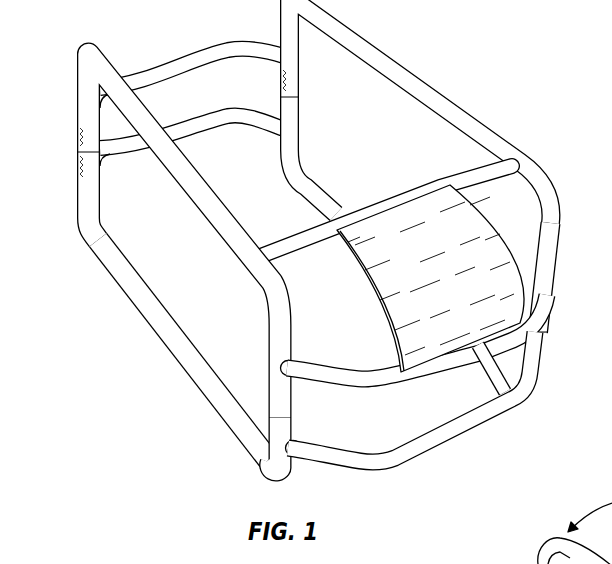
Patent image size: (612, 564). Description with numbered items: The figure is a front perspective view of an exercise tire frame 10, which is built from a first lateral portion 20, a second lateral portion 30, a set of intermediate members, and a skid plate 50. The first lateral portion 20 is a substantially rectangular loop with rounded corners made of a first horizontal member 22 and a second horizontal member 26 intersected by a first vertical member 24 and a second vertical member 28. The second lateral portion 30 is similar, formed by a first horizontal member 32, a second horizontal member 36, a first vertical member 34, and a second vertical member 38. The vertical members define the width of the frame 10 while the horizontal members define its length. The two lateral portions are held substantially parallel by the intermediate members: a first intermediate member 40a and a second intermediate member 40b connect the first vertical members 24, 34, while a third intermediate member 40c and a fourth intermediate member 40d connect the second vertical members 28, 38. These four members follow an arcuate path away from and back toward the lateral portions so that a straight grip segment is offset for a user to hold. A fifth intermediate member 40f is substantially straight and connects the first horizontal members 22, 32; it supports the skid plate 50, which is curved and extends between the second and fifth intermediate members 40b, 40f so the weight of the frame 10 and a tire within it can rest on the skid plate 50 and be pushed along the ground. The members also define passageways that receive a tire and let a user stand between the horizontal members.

The exercise tire frame 10 is at (333, 252).
The first lateral portion 20 is at (439, 181).
The first horizontal member 22 is at (357, 35).
The first vertical member 24 is at (538, 330).
The second horizontal member 26 is at (320, 198).
The second vertical member 28 is at (297, 119).
The second lateral portion 30 is at (179, 269).
The first horizontal member 32 is at (212, 205).
The first vertical member 34 is at (266, 450).
The second horizontal member 36 is at (185, 360).
The second vertical member 38 is at (101, 178).
The first intermediate member 40a is at (428, 440).
The second intermediate member 40b is at (342, 380).
The third intermediate member 40c is at (198, 122).
The fourth intermediate member 40d is at (186, 62).
The fifth intermediate member 40f is at (303, 247).
The skid plate 50 is at (412, 296).